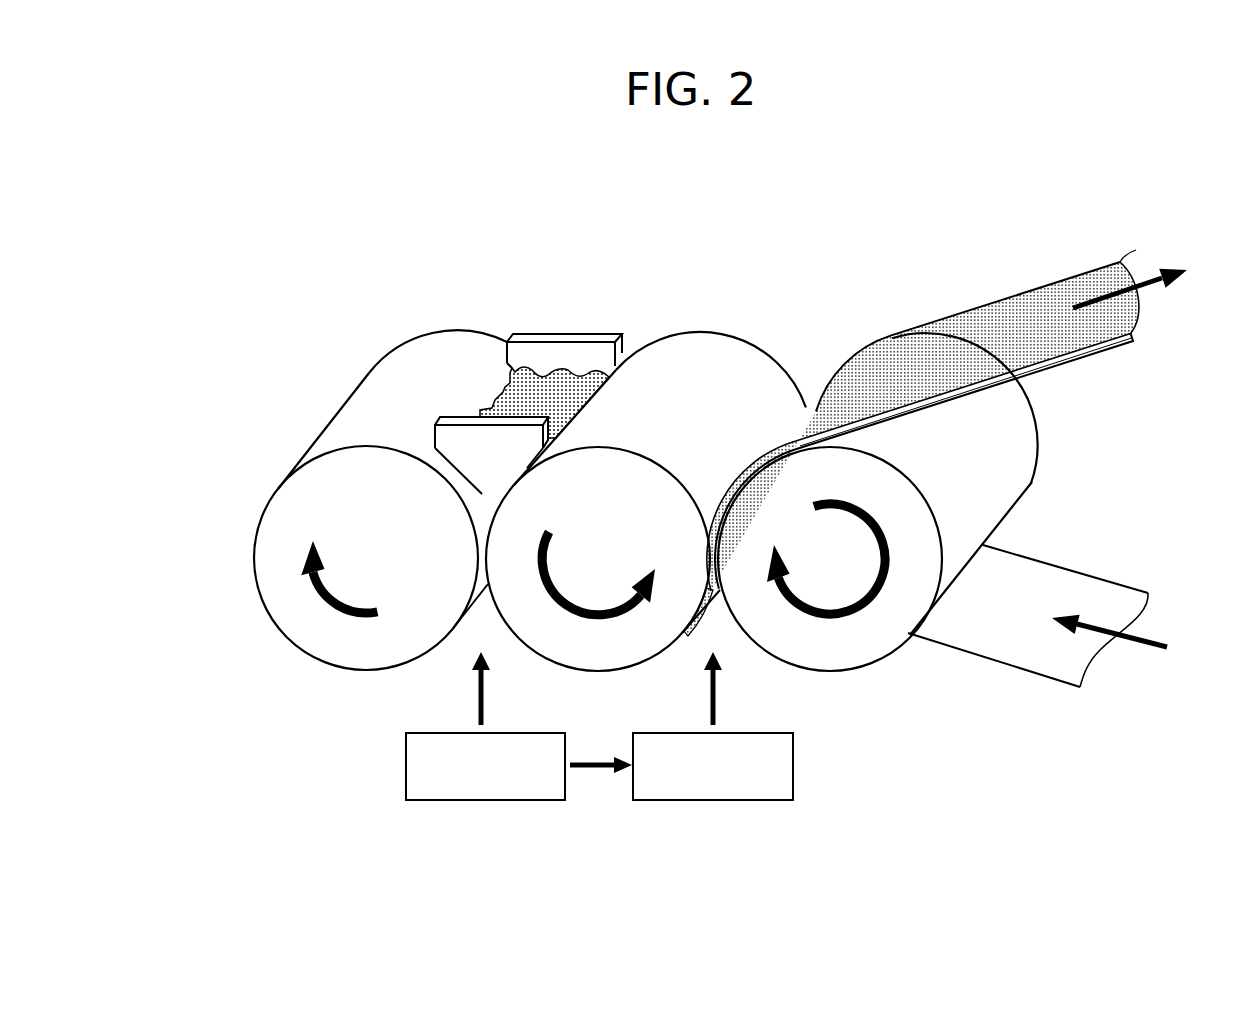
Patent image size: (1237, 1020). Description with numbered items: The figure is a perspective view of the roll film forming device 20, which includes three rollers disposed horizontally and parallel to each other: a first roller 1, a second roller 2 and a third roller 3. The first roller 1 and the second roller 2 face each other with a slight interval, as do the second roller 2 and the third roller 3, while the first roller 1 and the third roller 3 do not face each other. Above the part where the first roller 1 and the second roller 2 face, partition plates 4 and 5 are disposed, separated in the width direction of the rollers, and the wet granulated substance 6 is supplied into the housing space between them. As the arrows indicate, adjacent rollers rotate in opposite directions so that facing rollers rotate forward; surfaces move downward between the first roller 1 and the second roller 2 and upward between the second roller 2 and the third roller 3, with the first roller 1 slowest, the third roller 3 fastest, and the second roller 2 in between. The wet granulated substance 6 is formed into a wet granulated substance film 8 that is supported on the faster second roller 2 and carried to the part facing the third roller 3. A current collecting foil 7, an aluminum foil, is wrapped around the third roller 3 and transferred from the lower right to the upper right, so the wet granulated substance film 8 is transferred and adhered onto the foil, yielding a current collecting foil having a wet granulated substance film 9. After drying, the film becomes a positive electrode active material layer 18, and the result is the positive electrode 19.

The first roller 1 is at (283, 519).
The second roller 2 is at (720, 358).
The third roller 3 is at (832, 653).
The partition plate 4 is at (458, 422).
The partition plate 5 is at (553, 337).
The wet granulated substance 6 is at (527, 388).
The current collecting foil 7 is at (978, 655).
The wet granulated substance film 8 is at (697, 622).
The current collecting foil having a wet granulated substance film 9 is at (947, 399).
The positive electrode active material layer 18 is at (966, 328).
The positive electrode 19 is at (972, 337).
The roll film forming device 20 is at (646, 244).